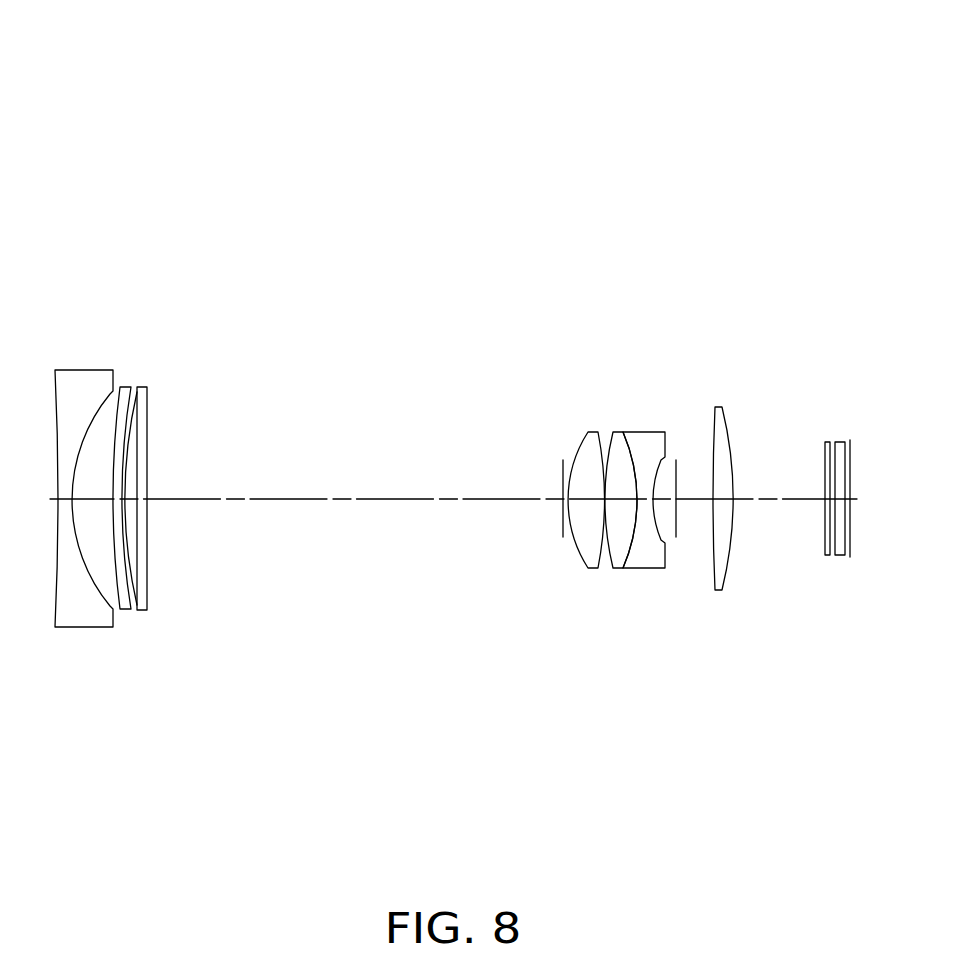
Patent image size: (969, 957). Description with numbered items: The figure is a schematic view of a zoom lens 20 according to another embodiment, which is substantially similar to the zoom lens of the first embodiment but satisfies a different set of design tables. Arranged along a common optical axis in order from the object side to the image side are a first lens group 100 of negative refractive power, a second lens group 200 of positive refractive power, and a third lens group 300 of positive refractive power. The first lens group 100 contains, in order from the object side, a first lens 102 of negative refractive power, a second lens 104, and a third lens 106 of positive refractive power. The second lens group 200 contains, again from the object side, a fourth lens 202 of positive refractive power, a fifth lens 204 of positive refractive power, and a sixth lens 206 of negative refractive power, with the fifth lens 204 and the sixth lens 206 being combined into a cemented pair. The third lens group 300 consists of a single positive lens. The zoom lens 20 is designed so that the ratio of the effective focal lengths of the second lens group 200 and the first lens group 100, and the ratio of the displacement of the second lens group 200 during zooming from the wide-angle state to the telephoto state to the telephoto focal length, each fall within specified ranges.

The zoom lens 20 is at (390, 90).
The first lens group 100 is at (58, 311).
The first lens 102 is at (84, 393).
The second lens 104 is at (120, 387).
The third lens 106 is at (140, 403).
The second lens group 200 is at (507, 377).
The fourth lens 202 is at (588, 448).
The fifth lens 204 is at (617, 453).
The sixth lens 206 is at (635, 447).
The third lens group 300 is at (723, 420).